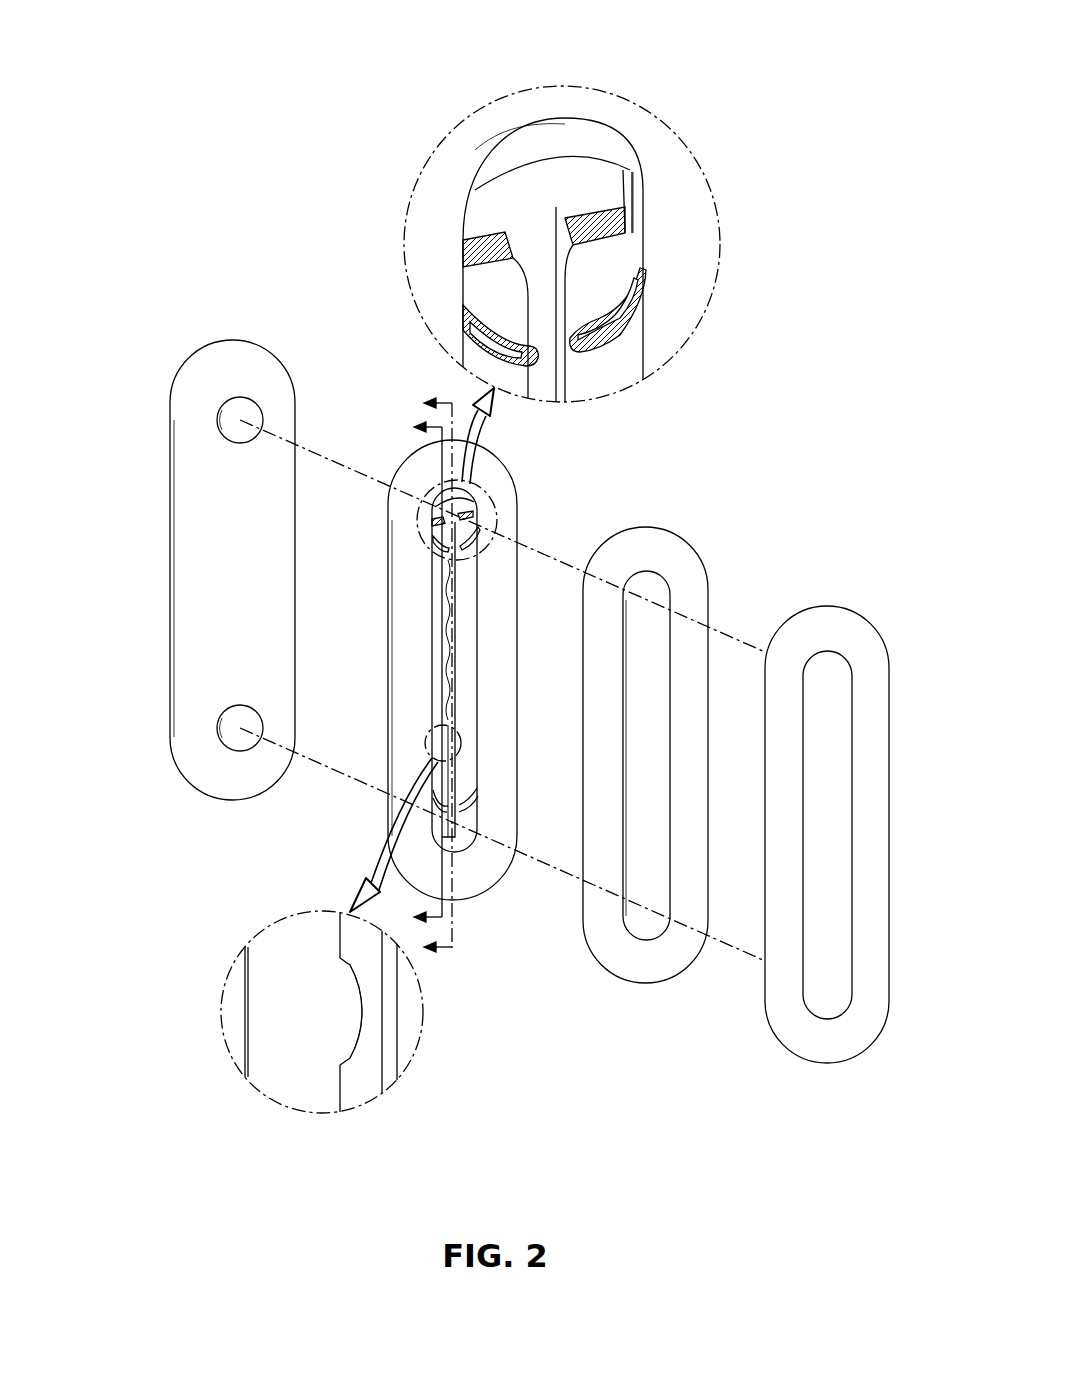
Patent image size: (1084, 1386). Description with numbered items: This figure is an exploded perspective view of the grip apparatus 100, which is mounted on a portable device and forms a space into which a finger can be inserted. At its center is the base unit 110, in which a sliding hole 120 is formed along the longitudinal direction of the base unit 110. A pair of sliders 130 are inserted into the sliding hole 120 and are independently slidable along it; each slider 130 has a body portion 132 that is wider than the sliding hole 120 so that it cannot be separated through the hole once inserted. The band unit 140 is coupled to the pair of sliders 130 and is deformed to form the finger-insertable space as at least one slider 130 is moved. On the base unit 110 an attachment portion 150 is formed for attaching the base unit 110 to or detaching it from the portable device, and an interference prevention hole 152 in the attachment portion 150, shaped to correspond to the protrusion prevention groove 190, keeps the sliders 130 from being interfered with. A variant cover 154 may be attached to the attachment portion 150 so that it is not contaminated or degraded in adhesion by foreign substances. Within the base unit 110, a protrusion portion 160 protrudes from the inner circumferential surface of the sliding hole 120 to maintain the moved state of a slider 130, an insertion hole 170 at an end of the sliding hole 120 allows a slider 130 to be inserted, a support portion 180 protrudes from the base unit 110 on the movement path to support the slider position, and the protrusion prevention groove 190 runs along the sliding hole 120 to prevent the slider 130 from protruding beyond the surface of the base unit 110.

The grip apparatus 100 is at (133, 130).
The base unit 110 is at (497, 478).
The sliding hole 120 is at (540, 368).
The slider 130 is at (217, 419).
The body portion 132 is at (233, 407).
The band unit 140 is at (237, 355).
The attachment portion 150 is at (657, 545).
The interference prevention hole 152 is at (625, 923).
The variant cover 154 is at (832, 626).
The protrusion portion 160 is at (355, 1005).
The insertion hole 170 is at (537, 188).
The support portion 180 is at (620, 310).
The protrusion prevention groove 190 is at (604, 268).